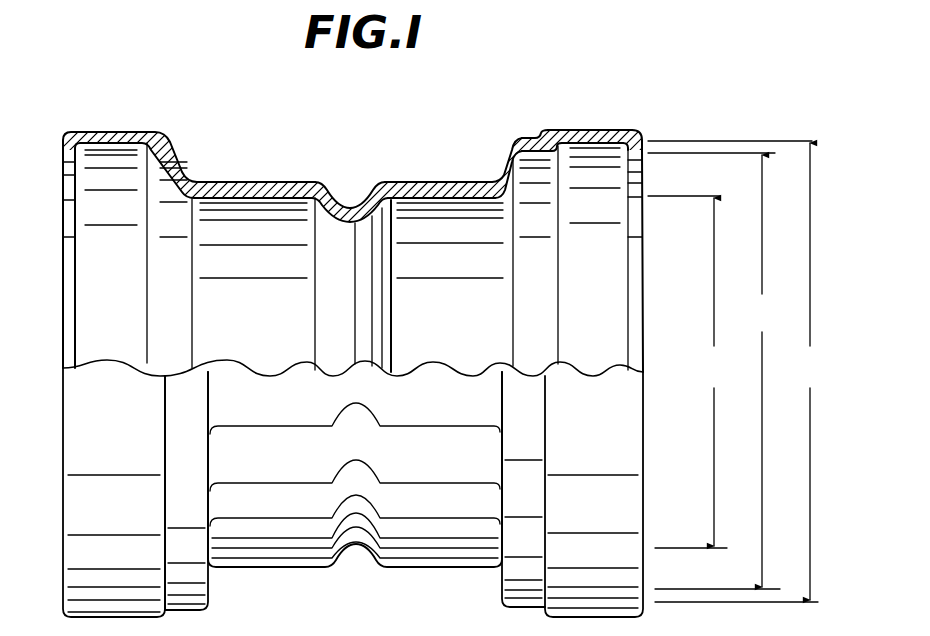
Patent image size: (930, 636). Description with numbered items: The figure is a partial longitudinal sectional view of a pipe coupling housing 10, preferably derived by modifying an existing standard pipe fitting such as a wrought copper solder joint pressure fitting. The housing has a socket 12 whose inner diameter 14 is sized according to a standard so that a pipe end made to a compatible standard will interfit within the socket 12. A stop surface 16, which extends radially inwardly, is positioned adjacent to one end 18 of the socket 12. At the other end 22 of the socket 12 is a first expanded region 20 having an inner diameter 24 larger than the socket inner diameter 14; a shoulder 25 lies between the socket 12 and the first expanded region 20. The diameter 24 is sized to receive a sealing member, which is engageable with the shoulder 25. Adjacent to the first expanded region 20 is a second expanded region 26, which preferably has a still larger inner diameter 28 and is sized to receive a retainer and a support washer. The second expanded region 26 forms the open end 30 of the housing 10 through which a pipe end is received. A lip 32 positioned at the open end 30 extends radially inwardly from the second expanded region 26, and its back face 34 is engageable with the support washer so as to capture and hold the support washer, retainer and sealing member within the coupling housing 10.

The pipe coupling housing 10 is at (427, 557).
The socket 12 is at (477, 318).
The inner diameter 14 is at (691, 372).
The stop surface 16 is at (388, 340).
The one end 18 is at (385, 181).
The first expanded region 20 is at (525, 137).
The other end 22 is at (494, 181).
The inner diameter 24 is at (714, 371).
The shoulder 25 is at (516, 184).
The second expanded region 26 is at (596, 129).
The inner diameter 28 is at (737, 371).
The open end 30 is at (623, 291).
The lip 32 is at (634, 142).
The back face 34 is at (627, 147).